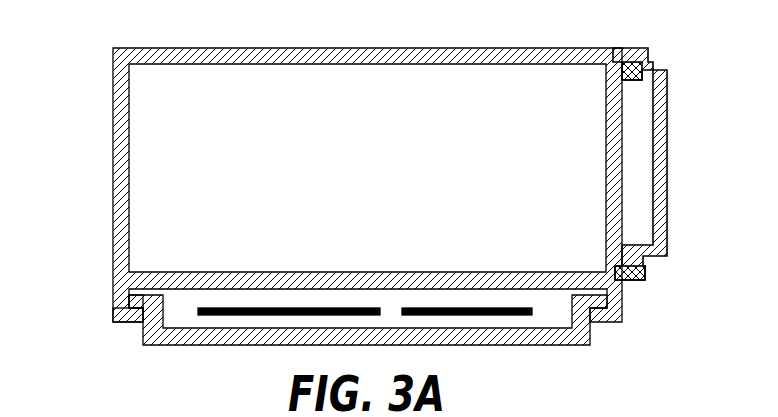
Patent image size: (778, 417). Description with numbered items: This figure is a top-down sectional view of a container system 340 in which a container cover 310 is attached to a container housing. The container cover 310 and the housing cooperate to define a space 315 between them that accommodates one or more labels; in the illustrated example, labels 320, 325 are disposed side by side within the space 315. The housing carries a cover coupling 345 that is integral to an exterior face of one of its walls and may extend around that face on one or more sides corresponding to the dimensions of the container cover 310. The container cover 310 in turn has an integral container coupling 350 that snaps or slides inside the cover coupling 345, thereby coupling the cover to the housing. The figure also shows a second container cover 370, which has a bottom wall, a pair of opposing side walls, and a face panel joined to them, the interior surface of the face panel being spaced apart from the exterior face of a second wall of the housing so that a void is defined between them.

The container system 340 is at (337, 166).
The container cover 310 is at (530, 345).
The space 315 is at (395, 298).
The label 320 is at (290, 308).
The label 325 is at (478, 310).
The cover coupling 345 is at (137, 324).
The container coupling 350 is at (135, 300).
The second container cover 370 is at (667, 117).